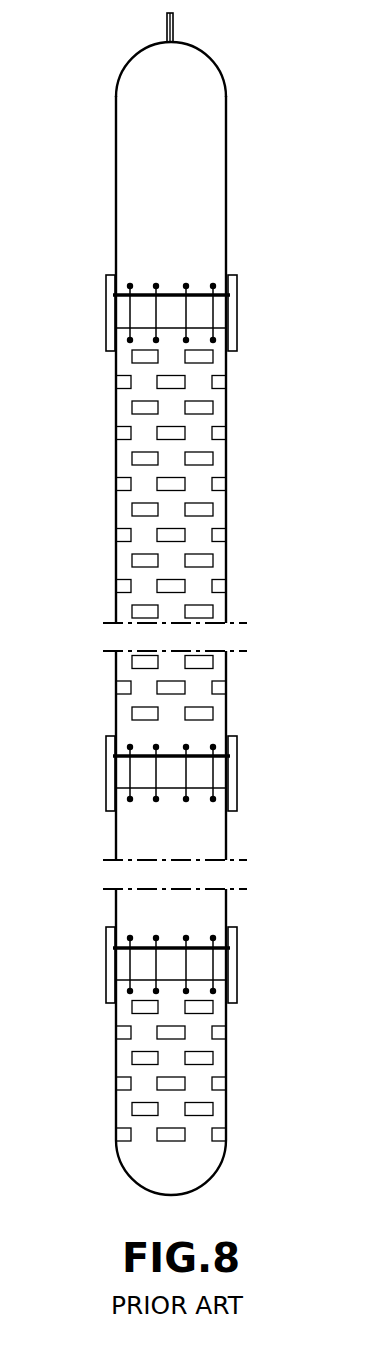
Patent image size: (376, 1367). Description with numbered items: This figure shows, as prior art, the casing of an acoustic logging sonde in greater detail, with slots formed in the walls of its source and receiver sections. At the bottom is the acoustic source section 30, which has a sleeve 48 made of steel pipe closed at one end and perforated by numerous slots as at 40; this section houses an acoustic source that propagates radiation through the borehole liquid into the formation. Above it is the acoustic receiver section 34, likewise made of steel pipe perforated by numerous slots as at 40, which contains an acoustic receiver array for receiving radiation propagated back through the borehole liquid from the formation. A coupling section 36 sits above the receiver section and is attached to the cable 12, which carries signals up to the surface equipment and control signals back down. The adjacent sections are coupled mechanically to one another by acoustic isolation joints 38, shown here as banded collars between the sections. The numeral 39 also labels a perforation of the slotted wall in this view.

The cable 12 is at (176, 23).
The coupling section 36 is at (135, 103).
The acoustic isolation joint 38 is at (148, 320).
The acoustic receiver section 34 is at (115, 407).
The perforation 39 is at (198, 530).
The slot 40 is at (170, 536).
The acoustic source section 30 is at (116, 1013).
The sleeve 48 is at (131, 1120).